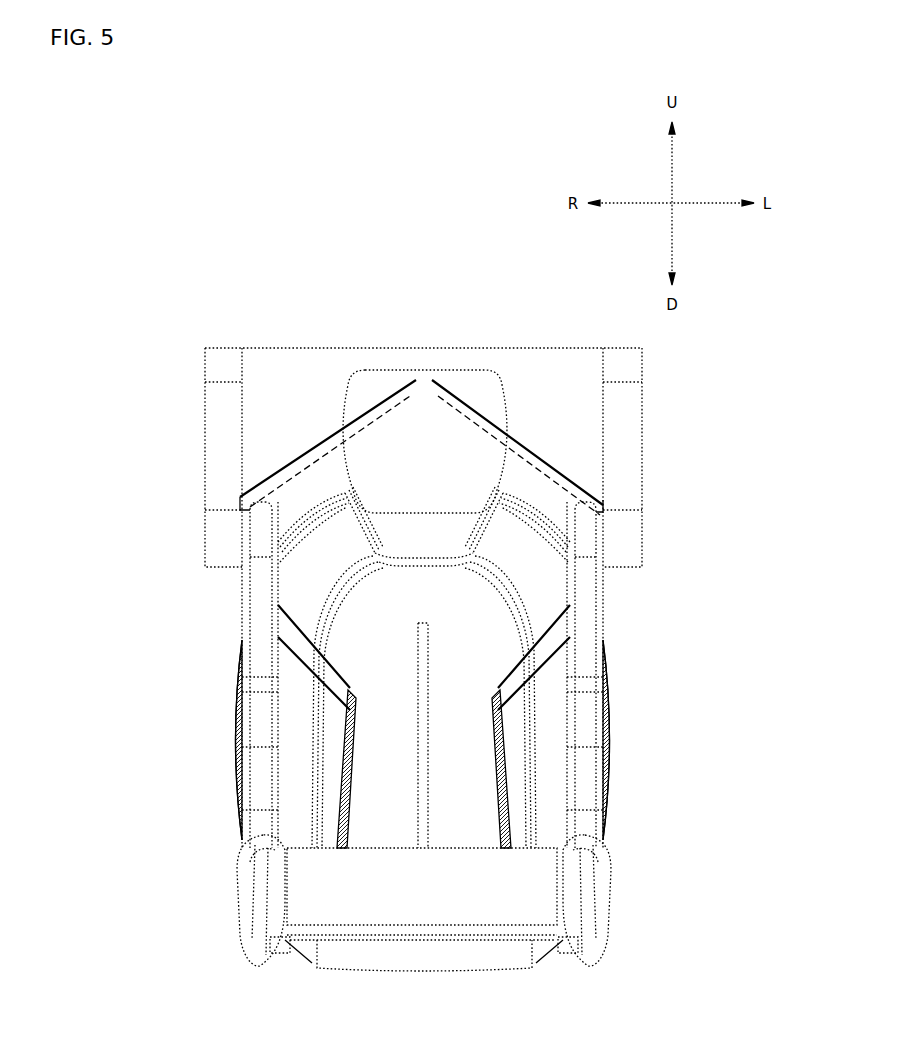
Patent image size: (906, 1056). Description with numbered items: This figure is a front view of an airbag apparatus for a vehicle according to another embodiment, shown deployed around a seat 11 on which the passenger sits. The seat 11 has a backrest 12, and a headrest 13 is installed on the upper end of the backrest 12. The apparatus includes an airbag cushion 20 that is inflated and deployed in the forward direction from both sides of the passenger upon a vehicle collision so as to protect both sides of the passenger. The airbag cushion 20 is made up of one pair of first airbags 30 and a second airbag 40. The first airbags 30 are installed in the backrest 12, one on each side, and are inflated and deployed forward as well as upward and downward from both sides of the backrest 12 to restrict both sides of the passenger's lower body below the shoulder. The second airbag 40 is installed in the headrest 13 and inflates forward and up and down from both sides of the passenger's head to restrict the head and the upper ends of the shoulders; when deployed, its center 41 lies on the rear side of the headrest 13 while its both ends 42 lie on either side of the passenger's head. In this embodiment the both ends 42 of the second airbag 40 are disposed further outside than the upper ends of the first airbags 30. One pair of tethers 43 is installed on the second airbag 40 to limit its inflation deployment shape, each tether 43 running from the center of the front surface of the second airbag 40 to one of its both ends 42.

The seat 11 is at (485, 895).
The backrest 12 is at (462, 752).
The headrest 13 is at (413, 450).
The airbag cushion 20 is at (88, 472).
The first airbags 30 is at (240, 767).
The second airbag 40 is at (207, 456).
The center 41 is at (470, 347).
The both ends 42 is at (207, 412).
The tethers 43 is at (301, 457).